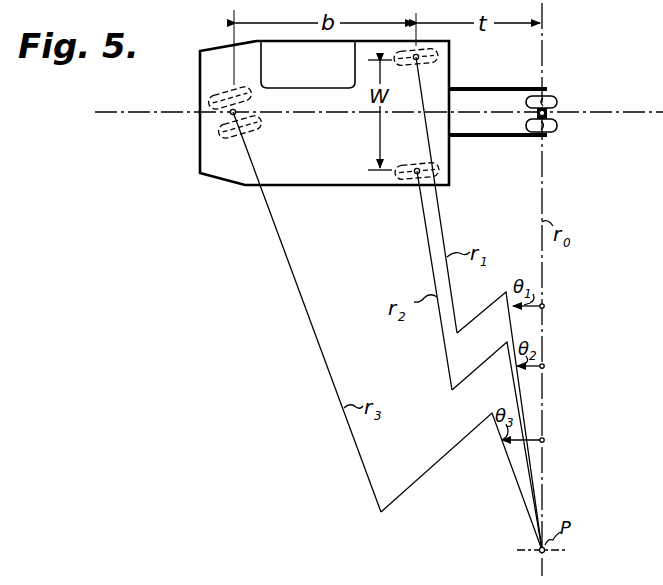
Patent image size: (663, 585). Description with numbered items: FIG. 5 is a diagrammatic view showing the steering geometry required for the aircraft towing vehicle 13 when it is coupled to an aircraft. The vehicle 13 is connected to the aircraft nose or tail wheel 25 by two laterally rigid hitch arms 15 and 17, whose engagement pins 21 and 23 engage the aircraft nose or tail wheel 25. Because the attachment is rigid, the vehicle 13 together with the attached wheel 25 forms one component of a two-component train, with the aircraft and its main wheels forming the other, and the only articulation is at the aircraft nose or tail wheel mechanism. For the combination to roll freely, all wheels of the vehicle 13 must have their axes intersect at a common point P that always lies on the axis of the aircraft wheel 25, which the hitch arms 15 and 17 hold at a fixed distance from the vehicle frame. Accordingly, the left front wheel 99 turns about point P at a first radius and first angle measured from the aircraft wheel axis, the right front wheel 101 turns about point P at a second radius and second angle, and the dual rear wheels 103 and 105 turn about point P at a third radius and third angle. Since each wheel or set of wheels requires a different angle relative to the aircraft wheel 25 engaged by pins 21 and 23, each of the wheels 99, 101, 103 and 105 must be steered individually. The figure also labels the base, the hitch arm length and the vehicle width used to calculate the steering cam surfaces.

The aircraft towing vehicle 13 is at (347, 187).
The hitch arm 15 is at (488, 139).
The hitch arm 17 is at (491, 86).
The engagement pin 21 is at (547, 128).
The engagement pin 23 is at (545, 98).
The aircraft nose or tail wheel 25 is at (552, 120).
The left front wheel 99 is at (436, 62).
The right front wheel 101 is at (405, 182).
The dual rear wheel 103 is at (208, 97).
The dual rear wheel 105 is at (222, 138).